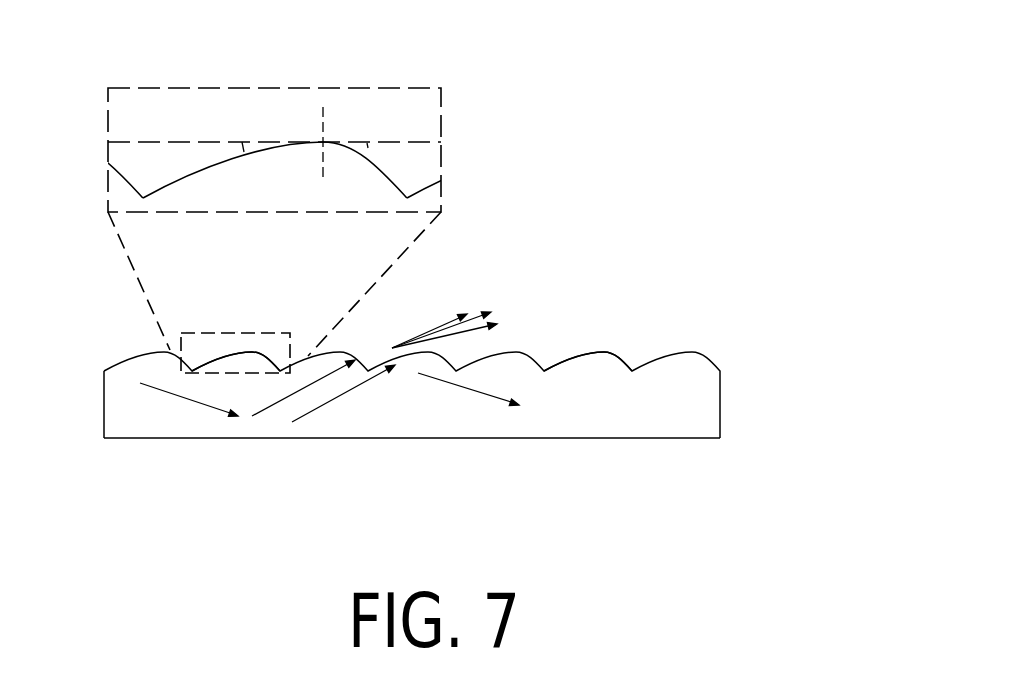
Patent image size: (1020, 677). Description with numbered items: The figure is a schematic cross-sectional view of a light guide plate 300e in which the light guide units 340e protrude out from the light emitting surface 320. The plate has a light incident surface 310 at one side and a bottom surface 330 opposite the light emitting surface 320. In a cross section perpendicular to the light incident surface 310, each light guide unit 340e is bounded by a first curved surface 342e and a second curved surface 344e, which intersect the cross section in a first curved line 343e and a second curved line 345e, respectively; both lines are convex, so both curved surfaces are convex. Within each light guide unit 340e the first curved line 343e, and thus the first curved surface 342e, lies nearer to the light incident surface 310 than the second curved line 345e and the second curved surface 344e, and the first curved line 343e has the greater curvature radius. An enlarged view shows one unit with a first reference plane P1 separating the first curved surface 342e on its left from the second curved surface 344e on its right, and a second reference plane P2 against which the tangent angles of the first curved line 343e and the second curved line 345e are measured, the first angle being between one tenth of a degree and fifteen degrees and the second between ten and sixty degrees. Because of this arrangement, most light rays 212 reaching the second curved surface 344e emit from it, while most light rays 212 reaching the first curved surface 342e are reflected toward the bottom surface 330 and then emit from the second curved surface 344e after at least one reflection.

The light guide plate 300e is at (737, 551).
The light incident surface 310 is at (103, 402).
The light emitting surface 320 is at (690, 338).
The bottom surface 330 is at (702, 442).
The light guide unit 340e is at (273, 358).
The first curved surface 342e is at (572, 357).
The second curved surface 344e is at (625, 358).
The first curved line 343e is at (167, 183).
The second curved line 345e is at (384, 165).
The light ray 212 is at (172, 397).
The first reference plane P1 is at (326, 114).
The second reference plane P2 is at (275, 140).